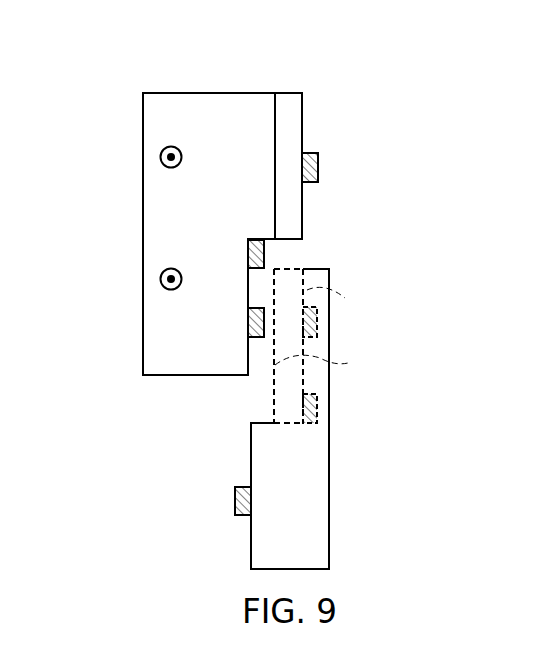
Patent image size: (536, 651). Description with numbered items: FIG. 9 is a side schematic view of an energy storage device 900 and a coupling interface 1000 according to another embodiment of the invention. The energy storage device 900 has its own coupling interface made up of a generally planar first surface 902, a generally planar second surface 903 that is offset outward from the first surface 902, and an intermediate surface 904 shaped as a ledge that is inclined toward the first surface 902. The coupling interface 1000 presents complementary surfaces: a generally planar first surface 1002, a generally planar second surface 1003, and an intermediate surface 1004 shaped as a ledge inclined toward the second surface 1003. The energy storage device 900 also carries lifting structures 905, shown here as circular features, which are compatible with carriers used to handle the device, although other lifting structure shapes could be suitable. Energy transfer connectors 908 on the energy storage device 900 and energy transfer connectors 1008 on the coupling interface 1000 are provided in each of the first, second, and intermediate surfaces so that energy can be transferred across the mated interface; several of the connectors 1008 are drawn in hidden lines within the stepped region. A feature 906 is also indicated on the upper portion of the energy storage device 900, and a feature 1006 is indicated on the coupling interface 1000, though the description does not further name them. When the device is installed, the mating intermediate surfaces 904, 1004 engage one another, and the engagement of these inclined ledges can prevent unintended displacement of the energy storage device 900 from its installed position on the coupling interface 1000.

The energy storage device 900 is at (146, 86).
The first surface 902 is at (249, 364).
The second surface 903 is at (305, 117).
The intermediate surface 904 is at (262, 276).
The lifting structures 905 is at (160, 152).
The mating portion 906 is at (277, 113).
The energy transfer connectors 908 is at (318, 163).
The coupling interface 1000 is at (325, 265).
The first surface 1002 is at (251, 535).
The second surface 1003 is at (345, 298).
The intermediate surface 1004 is at (262, 422).
The second recess 1006 is at (348, 363).
The energy transfer connectors 1008 is at (318, 314).